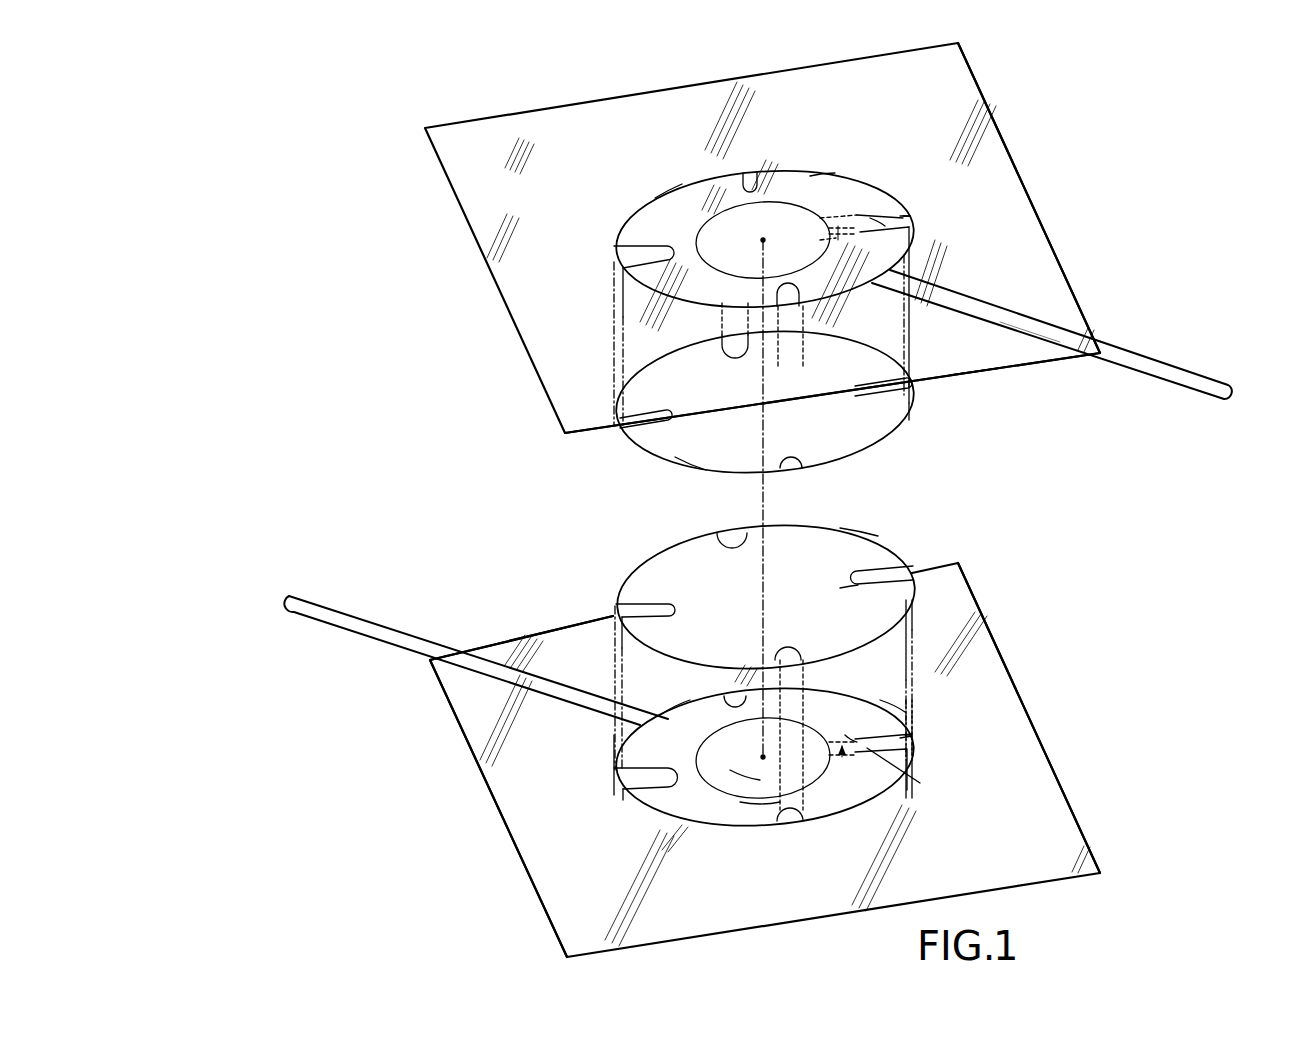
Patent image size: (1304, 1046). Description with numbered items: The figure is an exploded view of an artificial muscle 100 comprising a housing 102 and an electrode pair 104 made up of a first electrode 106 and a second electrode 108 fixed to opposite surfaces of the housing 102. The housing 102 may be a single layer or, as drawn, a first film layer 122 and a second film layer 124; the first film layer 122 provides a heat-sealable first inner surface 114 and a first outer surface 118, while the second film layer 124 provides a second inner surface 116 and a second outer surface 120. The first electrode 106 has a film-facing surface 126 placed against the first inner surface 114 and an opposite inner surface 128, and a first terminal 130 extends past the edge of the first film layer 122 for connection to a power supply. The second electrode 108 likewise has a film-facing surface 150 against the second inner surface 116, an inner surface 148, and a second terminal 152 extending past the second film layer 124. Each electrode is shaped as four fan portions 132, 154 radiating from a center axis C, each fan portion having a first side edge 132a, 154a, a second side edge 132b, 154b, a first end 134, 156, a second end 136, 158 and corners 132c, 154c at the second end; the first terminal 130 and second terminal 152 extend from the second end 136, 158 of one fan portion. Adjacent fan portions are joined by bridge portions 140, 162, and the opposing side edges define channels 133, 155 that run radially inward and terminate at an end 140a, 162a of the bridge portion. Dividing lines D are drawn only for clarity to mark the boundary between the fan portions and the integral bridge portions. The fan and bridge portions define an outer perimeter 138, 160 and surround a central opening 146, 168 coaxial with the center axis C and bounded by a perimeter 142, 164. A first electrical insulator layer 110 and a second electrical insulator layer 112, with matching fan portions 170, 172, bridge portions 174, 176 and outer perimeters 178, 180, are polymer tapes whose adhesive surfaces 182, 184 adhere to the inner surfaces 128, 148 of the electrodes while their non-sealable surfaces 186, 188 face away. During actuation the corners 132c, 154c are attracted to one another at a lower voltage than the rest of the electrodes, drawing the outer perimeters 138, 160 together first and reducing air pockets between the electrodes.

The artificial muscle 100 is at (265, 158).
The housing 102 is at (470, 110).
The electrode pair 104 is at (1093, 415).
The first electrode 106 is at (615, 785).
The second electrode 108 is at (608, 235).
The first electrical insulator layer 110 is at (615, 565).
The second electrical insulator layer 112 is at (615, 440).
The first inner surface 114 is at (490, 636).
The second inner surface 116 is at (978, 378).
The first outer surface 118 is at (450, 706).
The second outer surface 120 is at (1032, 355).
The first film layer 122 is at (1050, 668).
The second film layer 124 is at (1040, 172).
The film-facing surface 126 is at (715, 840).
The inner surface 128 is at (643, 797).
The first terminal 130 is at (350, 612).
The fan portions 132 is at (900, 708).
The first side edge 132a is at (855, 715).
The second side edge 132b is at (730, 690).
The corners 132c is at (935, 724).
The channel 133 is at (908, 738).
The first end 134 is at (787, 731).
The second end 136 is at (872, 698).
The outer perimeter 138 is at (675, 707).
The bridge portion 140 is at (843, 760).
The end of bridge portion 140a is at (920, 783).
The perimeter of central opening 142 is at (758, 801).
The central opening 146 is at (738, 778).
The inner surface 148 is at (808, 333).
The film-facing surface 150 is at (840, 290).
The second terminal 152 is at (1188, 368).
The fan portions 154 is at (858, 158).
The first side edge 154a is at (880, 212).
The second side edge 154b is at (745, 178).
The corners 154c is at (912, 220).
The channel 155 is at (898, 218).
The first end 156 is at (755, 233).
The second end 158 is at (822, 172).
The outer perimeter 160 is at (668, 194).
The bridge portion 162 is at (842, 237).
The end of bridge portion 162a is at (855, 222).
The perimeter of central opening 164 is at (828, 240).
The central opening 168 is at (690, 230).
The fan portions 170 is at (858, 525).
The fan portions 172 is at (917, 437).
The bridge portions 174 is at (838, 587).
The bridge portions 176 is at (868, 405).
The outer perimeter 178 is at (920, 578).
The outer perimeter 180 is at (925, 395).
The adhesive surface 182 is at (616, 617).
The adhesive surface 184 is at (688, 464).
The non-sealable surface 186 is at (718, 541).
The non-sealable surface 188 is at (620, 424).
The center axis C is at (763, 568).
The dividing lines D is at (840, 765).